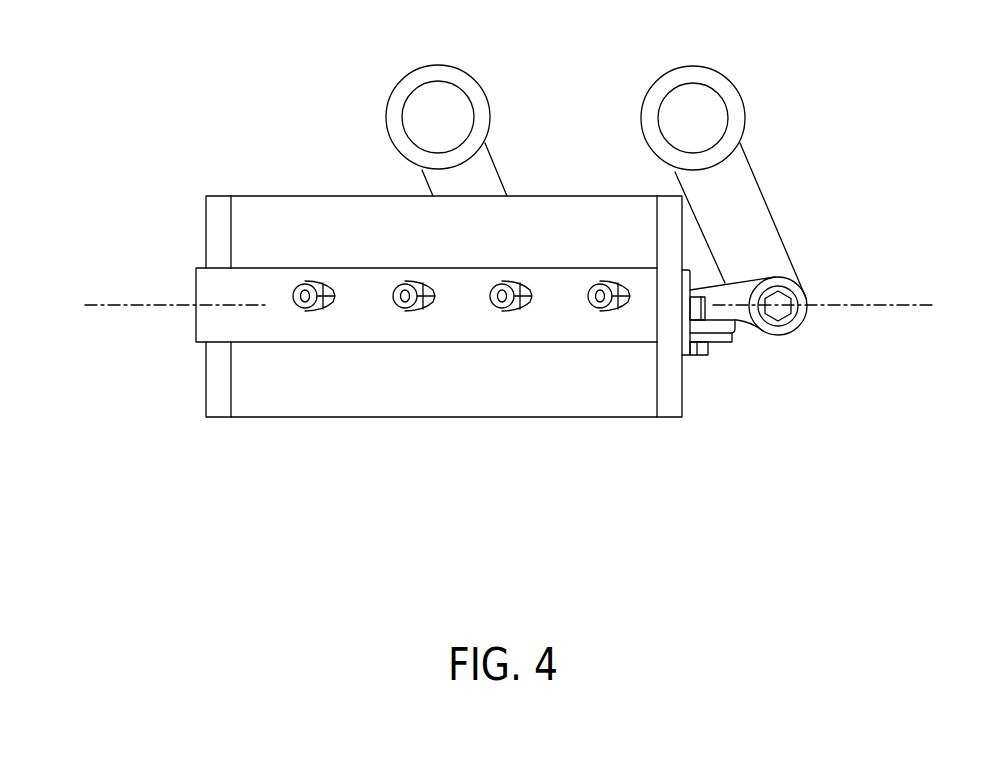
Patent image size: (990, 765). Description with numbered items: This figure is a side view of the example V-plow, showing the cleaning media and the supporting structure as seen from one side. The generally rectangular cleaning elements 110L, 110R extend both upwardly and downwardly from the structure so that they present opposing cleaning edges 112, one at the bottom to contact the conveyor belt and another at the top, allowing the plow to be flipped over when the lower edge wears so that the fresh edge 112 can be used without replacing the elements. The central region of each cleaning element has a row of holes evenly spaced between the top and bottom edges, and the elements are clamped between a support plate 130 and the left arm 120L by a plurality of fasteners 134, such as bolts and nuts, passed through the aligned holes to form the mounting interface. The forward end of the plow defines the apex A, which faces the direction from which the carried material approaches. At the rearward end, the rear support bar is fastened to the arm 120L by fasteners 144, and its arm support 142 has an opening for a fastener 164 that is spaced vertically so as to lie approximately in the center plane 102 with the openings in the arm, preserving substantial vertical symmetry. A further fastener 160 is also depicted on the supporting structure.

The center plane 102 is at (145, 305).
The cleaning edge 112 is at (223, 196).
The right cleaning element 110R is at (218, 400).
The left cleaning element 110L is at (320, 400).
The support plate 130 is at (195, 330).
The fasteners 134 is at (316, 285).
The fastener 160 is at (471, 70).
The fasteners 164 is at (778, 300).
The arm support 142 is at (790, 337).
The left arm 120L is at (718, 347).
The fasteners 144 is at (695, 355).
The apex A is at (205, 227).